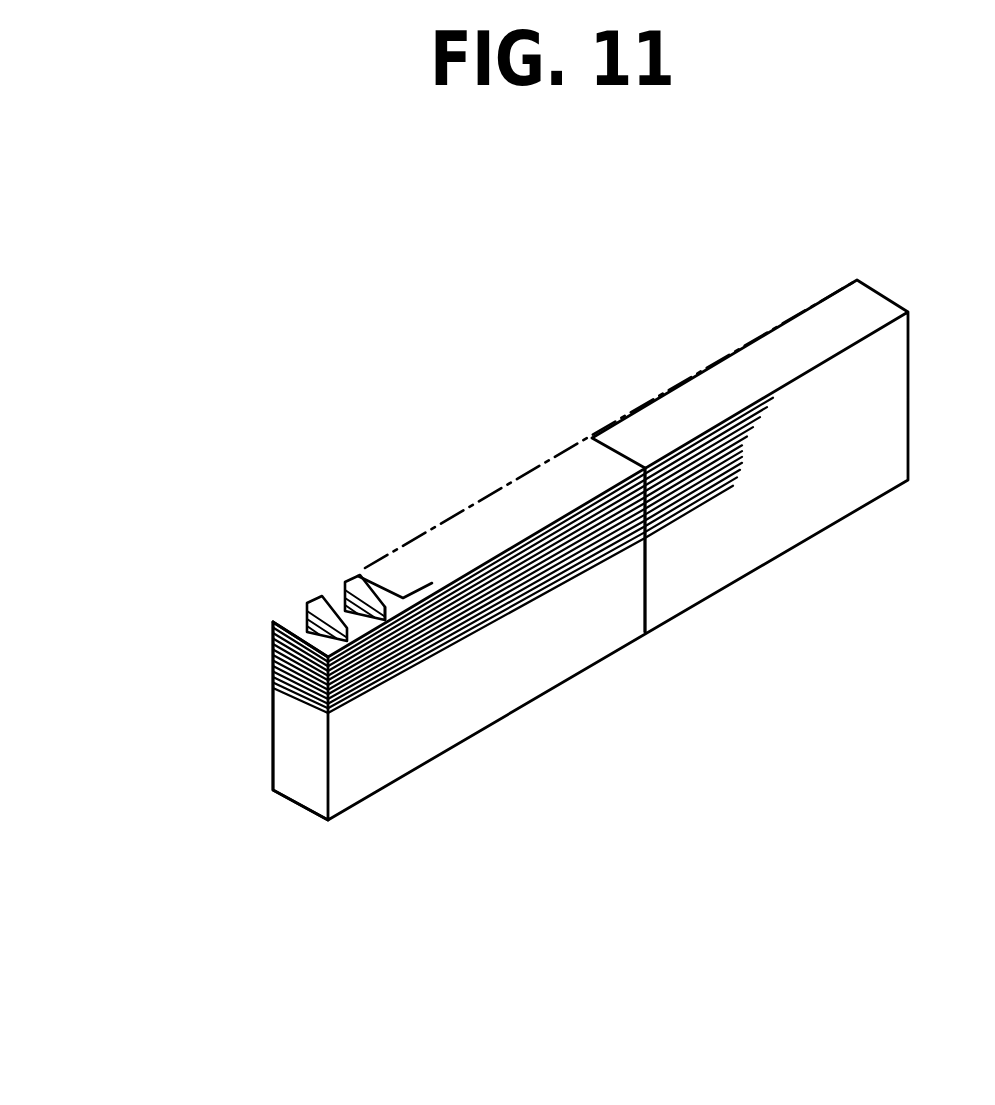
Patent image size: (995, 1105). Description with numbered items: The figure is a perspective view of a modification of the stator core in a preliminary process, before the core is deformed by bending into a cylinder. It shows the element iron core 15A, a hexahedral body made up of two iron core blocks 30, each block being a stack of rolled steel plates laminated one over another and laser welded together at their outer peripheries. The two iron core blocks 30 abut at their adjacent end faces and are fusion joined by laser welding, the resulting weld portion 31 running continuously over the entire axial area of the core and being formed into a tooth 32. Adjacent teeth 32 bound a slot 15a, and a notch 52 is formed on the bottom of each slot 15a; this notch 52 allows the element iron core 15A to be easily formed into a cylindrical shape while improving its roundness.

The element iron core 15A is at (750, 342).
The iron core block 30 is at (660, 420).
The weld portion 31 is at (647, 565).
The tooth 32 is at (363, 590).
The slot 15a is at (300, 618).
The notch 52 is at (378, 617).